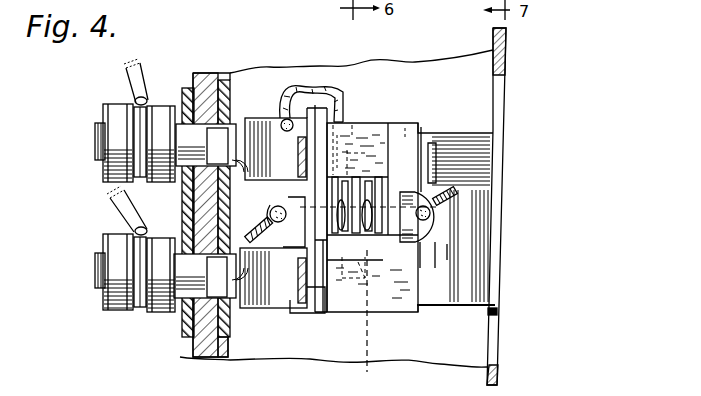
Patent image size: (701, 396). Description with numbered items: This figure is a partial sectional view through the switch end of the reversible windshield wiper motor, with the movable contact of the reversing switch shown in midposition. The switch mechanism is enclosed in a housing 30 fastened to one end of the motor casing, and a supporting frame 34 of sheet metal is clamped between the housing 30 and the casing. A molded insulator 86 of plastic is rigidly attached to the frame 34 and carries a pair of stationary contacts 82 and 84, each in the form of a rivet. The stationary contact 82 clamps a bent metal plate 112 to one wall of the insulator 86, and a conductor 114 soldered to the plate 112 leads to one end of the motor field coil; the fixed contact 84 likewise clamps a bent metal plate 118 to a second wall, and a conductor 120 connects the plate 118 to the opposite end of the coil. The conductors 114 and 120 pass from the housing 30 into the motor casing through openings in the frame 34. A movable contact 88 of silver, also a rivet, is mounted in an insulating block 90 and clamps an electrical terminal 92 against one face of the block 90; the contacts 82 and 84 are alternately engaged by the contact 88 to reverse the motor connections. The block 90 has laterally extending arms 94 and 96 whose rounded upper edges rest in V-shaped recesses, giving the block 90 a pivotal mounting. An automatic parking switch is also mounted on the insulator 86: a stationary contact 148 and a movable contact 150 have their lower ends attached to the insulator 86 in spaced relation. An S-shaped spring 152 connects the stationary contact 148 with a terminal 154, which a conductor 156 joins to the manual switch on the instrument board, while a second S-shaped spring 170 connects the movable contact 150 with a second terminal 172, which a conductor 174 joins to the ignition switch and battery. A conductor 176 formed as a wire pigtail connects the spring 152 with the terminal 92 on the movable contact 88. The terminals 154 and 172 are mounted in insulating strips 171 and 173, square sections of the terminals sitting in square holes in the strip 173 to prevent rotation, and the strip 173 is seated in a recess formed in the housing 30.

The housing 30 is at (188, 352).
The supporting frame 34 is at (502, 103).
The stationary contact 82 is at (346, 267).
The stationary contact 84 is at (411, 220).
The molded insulator 86 is at (404, 304).
The movable contact 88 is at (372, 212).
The insulating block 90 is at (366, 180).
The electrical terminal 92 is at (341, 183).
The laterally extending arm 94 is at (413, 112).
The laterally extending arm 96 is at (365, 323).
The bent metal plate 112 is at (287, 236).
The conductor 114 is at (270, 210).
The bent metal plate 118 is at (436, 232).
The conductor 120 is at (437, 202).
The stationary contact 148 is at (317, 147).
The movable contact 150 is at (308, 310).
The S-shaped spring 152 is at (262, 117).
The terminal 154 is at (113, 118).
The conductor 156 is at (126, 80).
The S-shaped spring 170 is at (258, 298).
The insulating strip 171 is at (179, 325).
The terminal 172 is at (113, 298).
The insulating strip 173 is at (210, 357).
The conductor 174 is at (128, 208).
The conductor 176 is at (340, 93).